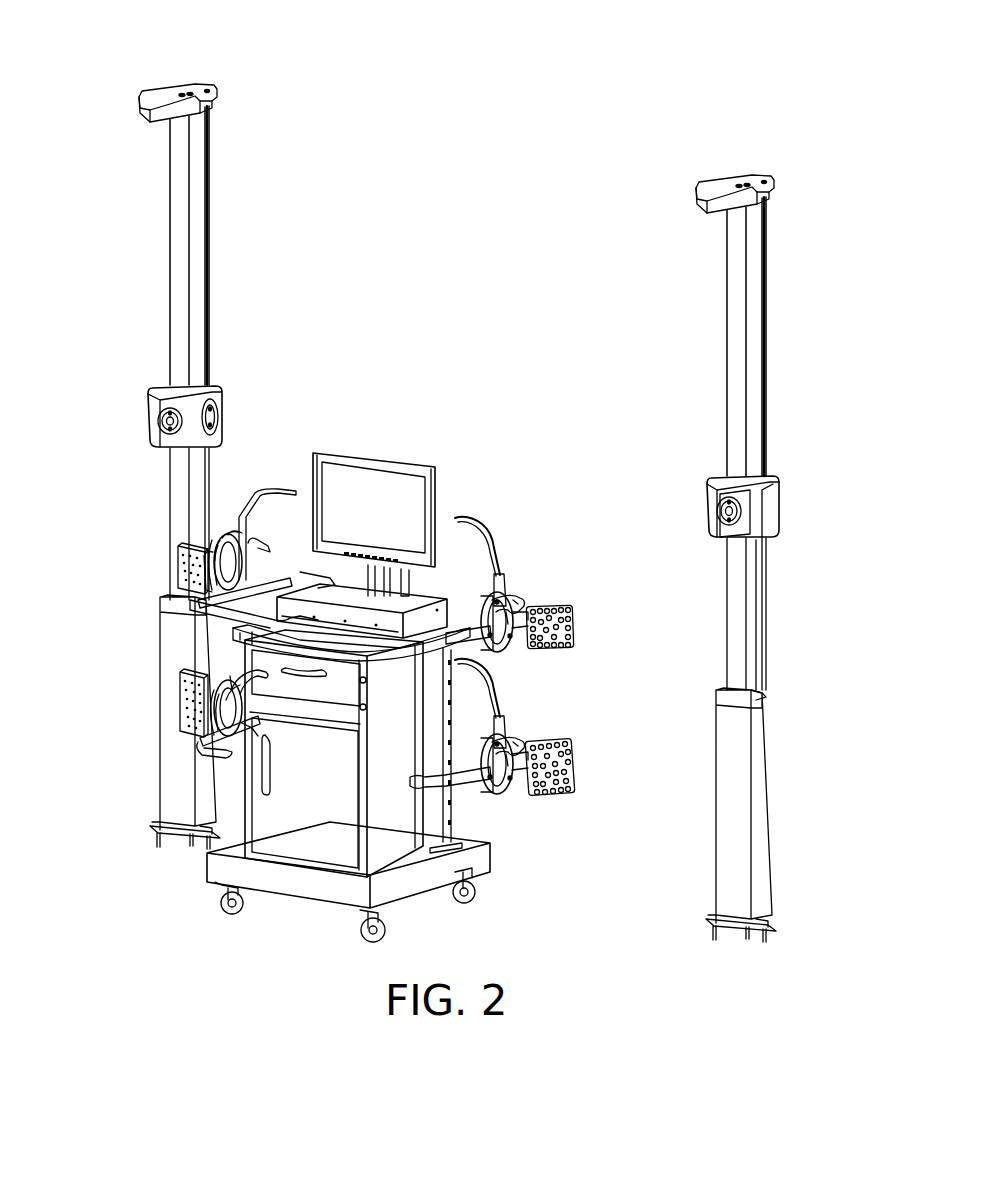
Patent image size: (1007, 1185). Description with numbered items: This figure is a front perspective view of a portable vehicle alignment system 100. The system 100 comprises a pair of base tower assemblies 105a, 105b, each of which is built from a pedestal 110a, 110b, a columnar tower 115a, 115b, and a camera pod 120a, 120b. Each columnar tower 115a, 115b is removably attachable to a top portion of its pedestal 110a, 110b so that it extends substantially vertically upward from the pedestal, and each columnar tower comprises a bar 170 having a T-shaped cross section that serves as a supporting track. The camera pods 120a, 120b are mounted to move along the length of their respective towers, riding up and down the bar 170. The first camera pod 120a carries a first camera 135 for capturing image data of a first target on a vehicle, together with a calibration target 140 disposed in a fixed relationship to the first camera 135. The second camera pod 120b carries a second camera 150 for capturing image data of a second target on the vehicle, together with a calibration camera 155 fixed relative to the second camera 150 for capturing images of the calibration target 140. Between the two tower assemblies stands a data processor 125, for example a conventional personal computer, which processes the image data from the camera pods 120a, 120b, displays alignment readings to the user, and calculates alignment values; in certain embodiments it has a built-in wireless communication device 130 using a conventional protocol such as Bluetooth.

The portable vehicle alignment system 100 is at (578, 78).
The base tower assembly 105a is at (97, 188).
The base tower assembly 105b is at (805, 296).
The pedestal 110a is at (160, 706).
The pedestal 110b is at (768, 772).
The columnar tower 115a is at (165, 150).
The columnar tower 115b is at (770, 220).
The camera pod 120a is at (148, 412).
The camera pod 120b is at (778, 500).
The data processor 125 is at (385, 455).
The wireless communication device 130 is at (440, 612).
The first camera 135 is at (166, 434).
The calibration target 140 is at (222, 416).
The second camera 150 is at (724, 524).
The calibration camera 155 is at (707, 492).
The bar 170 is at (170, 256).